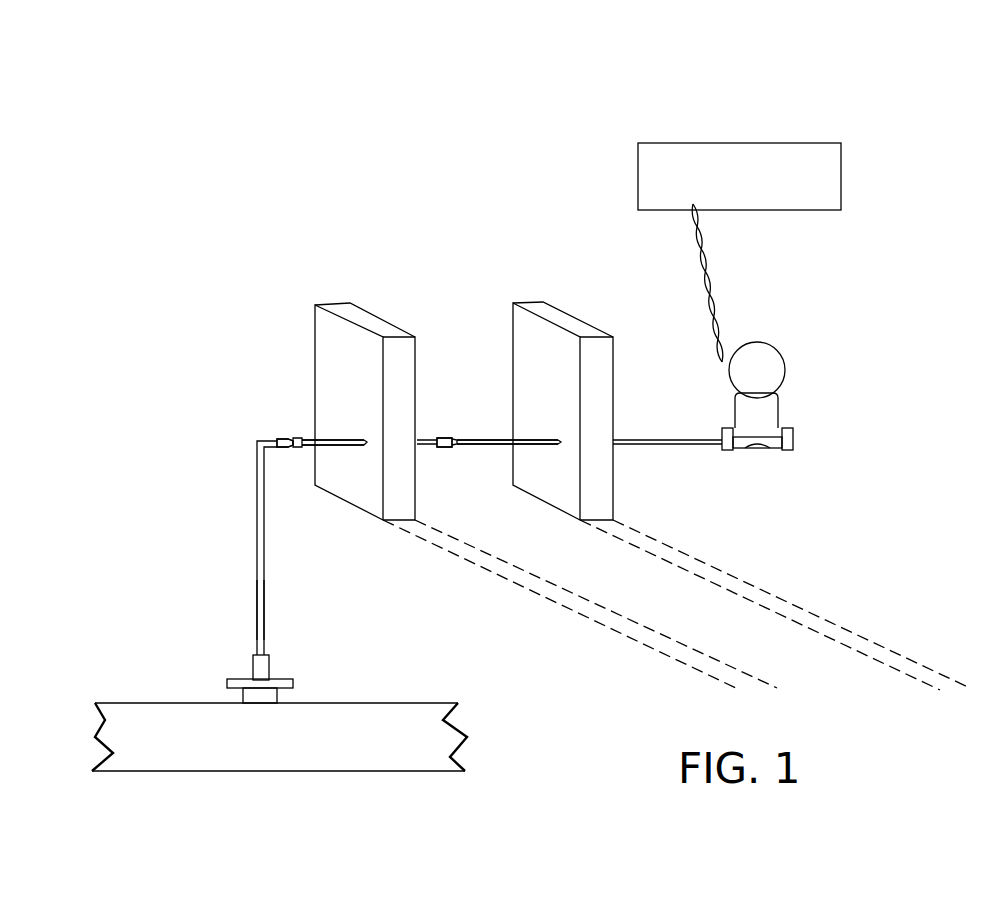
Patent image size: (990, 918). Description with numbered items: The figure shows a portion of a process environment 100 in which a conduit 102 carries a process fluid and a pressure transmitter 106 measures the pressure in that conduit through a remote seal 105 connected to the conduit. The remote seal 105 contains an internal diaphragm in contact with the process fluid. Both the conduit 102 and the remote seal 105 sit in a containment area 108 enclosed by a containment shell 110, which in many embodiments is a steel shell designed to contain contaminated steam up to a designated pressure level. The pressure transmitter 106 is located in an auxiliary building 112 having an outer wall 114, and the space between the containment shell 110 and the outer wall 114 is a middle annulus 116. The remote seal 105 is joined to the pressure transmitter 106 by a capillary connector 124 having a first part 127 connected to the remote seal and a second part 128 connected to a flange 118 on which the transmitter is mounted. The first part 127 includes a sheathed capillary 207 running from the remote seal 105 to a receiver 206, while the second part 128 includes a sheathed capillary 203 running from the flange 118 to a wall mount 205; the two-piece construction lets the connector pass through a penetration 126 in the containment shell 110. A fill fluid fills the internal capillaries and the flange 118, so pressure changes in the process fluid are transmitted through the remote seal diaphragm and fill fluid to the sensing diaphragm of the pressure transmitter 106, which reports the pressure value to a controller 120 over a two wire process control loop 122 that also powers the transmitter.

The process environment 100 is at (188, 160).
The conduit 102 is at (142, 763).
The remote seal 105 is at (277, 668).
The pressure transmitter 106 is at (772, 363).
The containment area 108 is at (562, 640).
The containment shell 110 is at (320, 347).
The auxiliary building 112 is at (800, 585).
The outer wall 114 is at (525, 333).
The middle annulus 116 is at (705, 633).
The flange 118 is at (795, 433).
The controller 120 is at (638, 180).
The two wire process control loop 122 is at (693, 287).
The capillary connector 124 is at (287, 413).
The penetration 126 is at (360, 447).
The first part 127 is at (208, 521).
The second part 128 is at (484, 410).
The sheathed capillary 203 is at (505, 447).
The wall mount 205 is at (440, 447).
The receiver 206 is at (285, 447).
The sheathed capillary 207 is at (260, 605).